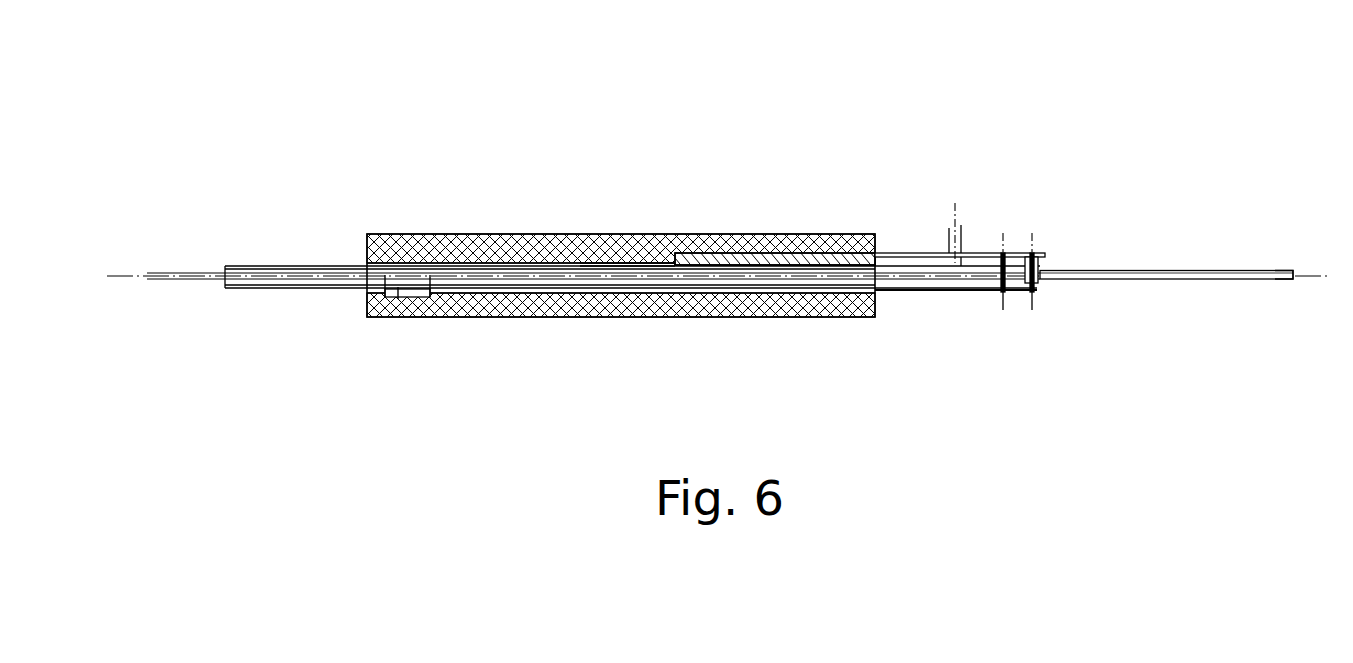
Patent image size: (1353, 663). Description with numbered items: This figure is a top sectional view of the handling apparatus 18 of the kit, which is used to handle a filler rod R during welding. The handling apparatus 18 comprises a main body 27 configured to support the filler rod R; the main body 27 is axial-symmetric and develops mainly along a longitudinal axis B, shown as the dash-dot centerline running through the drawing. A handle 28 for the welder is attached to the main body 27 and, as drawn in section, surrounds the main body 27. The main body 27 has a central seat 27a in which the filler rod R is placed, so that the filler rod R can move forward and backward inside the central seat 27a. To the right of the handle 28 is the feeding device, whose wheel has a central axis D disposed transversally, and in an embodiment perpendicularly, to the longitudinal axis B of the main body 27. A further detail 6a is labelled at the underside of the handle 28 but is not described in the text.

The handling apparatus 18 is at (346, 128).
The handle 28 is at (466, 234).
The main body 27 is at (664, 262).
The central seat 27a is at (589, 262).
The anchor element 6a is at (411, 318).
The central axis D is at (957, 226).
The filler rod R is at (1184, 270).
The longitudinal axis B is at (1273, 270).